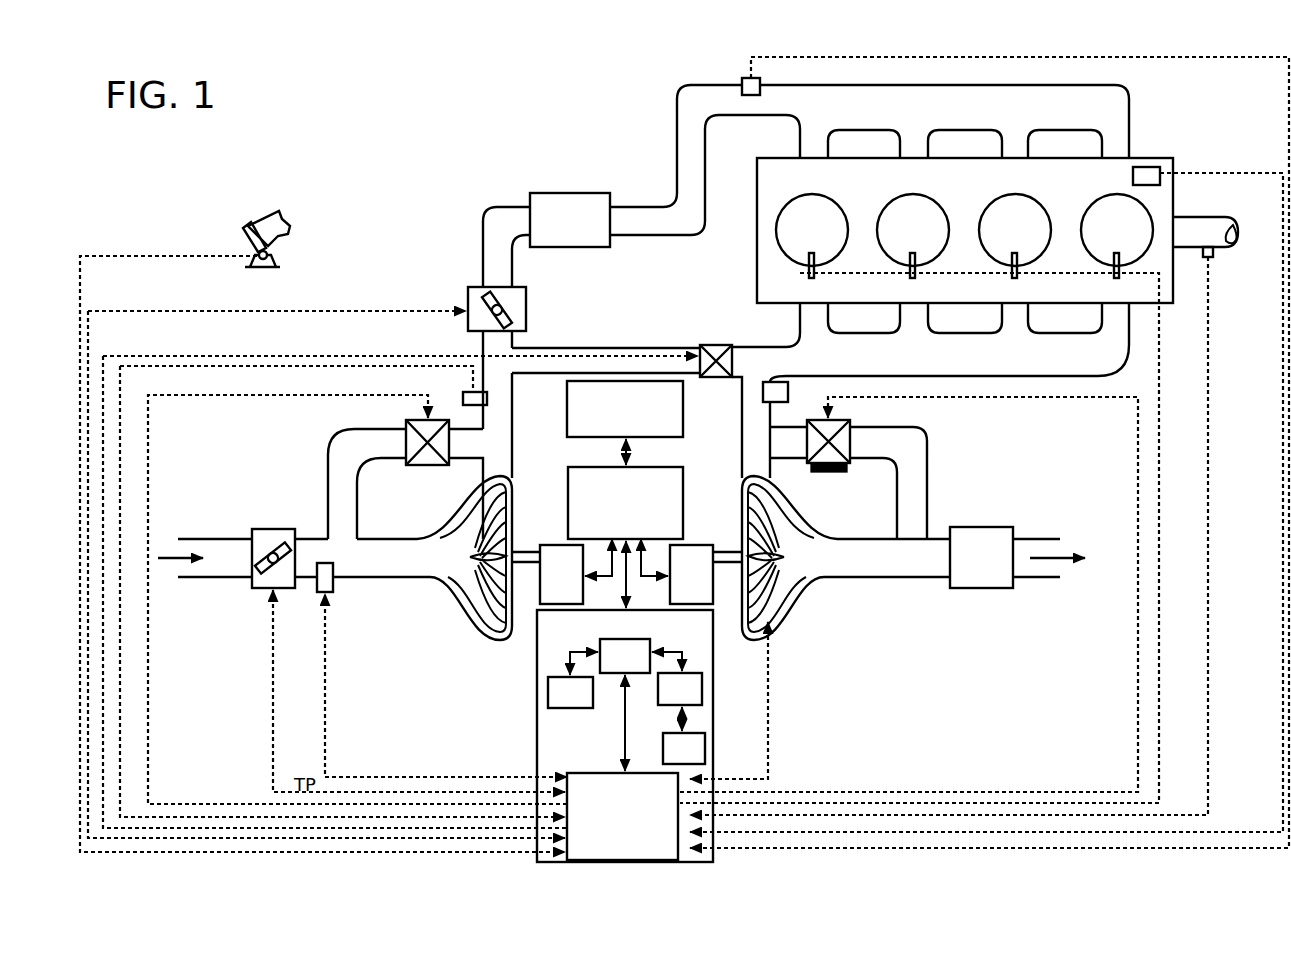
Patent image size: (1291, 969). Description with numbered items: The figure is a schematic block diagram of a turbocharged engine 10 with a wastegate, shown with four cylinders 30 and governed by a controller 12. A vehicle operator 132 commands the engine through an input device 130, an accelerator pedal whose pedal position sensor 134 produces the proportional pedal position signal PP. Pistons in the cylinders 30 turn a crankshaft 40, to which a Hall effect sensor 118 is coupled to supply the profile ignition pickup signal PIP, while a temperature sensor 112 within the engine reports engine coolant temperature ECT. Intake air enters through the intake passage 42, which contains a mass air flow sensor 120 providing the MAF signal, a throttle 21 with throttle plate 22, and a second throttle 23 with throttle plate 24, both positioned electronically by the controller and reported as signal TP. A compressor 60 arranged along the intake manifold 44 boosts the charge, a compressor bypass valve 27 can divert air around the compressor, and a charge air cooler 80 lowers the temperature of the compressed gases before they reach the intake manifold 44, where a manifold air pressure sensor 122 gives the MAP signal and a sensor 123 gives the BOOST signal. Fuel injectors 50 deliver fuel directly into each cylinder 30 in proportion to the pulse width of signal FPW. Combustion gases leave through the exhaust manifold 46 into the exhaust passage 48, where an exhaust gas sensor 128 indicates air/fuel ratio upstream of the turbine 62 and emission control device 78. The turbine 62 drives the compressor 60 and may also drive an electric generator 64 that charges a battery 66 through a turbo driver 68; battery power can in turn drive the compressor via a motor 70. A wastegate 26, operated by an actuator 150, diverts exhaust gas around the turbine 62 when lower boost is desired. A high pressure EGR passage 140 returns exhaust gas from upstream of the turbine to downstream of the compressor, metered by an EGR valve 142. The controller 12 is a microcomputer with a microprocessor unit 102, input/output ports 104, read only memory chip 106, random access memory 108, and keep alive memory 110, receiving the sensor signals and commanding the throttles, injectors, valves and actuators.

The engine 10 is at (965, 231).
The controller 12 is at (625, 736).
The throttle 21 is at (268, 529).
The throttle plate 22 is at (281, 545).
The throttle 23 is at (478, 287).
The throttle plate 24 is at (514, 320).
The wastegate 26 is at (850, 430).
The compressor bypass valve 27 is at (406, 432).
The cylinder 30 is at (964, 230).
The crankshaft 40 is at (1210, 217).
The intake passage 42 is at (294, 558).
The intake manifold 44 is at (869, 160).
The exhaust manifold 46 is at (930, 390).
The exhaust passage 48 is at (887, 558).
The fuel injector 50 is at (1114, 279).
The compressor 60 is at (478, 602).
The turbine 62 is at (784, 512).
The electric generator 64 is at (677, 571).
The battery 66 is at (683, 411).
The turbo driver 68 is at (660, 467).
The motor 70 is at (576, 571).
The emission control device 78 is at (1017, 557).
The charge air cooler 80 is at (545, 193).
The microprocessor unit 102 is at (582, 650).
The input/output ports 104 is at (622, 816).
The read only memory chip 106 is at (548, 700).
The random access memory 108 is at (700, 679).
The keep alive memory 110 is at (705, 738).
The temperature sensor 112 is at (1148, 167).
The Hall effect sensor 118 is at (1210, 258).
The mass air flow sensor 120 is at (335, 578).
The manifold air pressure sensor 122 is at (742, 82).
The sensor 123 is at (463, 397).
The exhaust gas sensor 128 is at (788, 392).
The input device 130 is at (250, 237).
The vehicle operator 132 is at (290, 223).
The pedal position sensor 134 is at (282, 257).
The EGR passage 140 is at (595, 356).
The EGR valve 142 is at (716, 345).
The actuator 150 is at (836, 473).